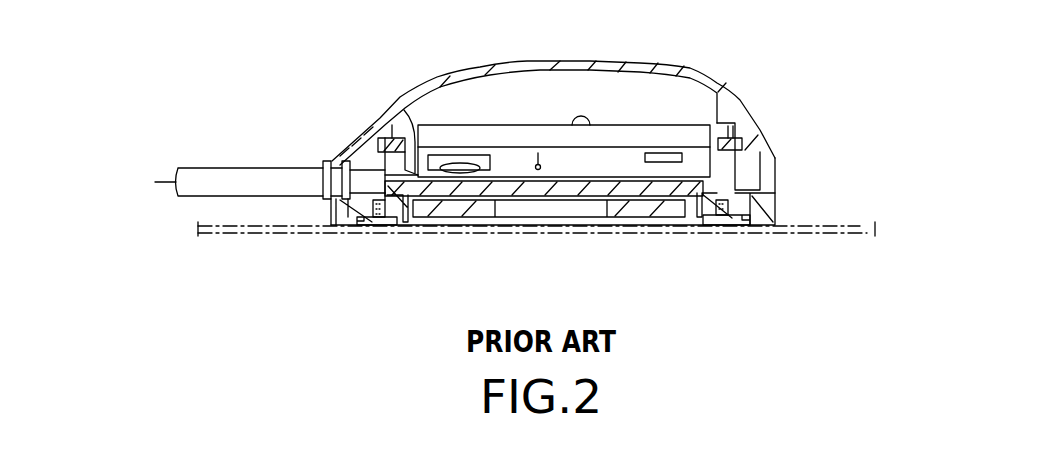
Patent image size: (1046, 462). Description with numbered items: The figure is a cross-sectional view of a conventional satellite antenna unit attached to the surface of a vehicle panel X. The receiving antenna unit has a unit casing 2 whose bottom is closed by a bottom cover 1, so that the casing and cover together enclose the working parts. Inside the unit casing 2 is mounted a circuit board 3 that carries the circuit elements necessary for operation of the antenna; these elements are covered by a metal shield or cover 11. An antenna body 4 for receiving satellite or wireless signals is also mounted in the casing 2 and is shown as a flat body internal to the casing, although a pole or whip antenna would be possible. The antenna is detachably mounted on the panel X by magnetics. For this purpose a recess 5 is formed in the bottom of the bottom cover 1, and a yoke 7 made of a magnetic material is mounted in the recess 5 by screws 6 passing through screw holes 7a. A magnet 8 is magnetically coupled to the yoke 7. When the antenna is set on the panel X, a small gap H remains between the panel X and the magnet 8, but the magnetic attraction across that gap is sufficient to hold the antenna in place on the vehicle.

The bottom cover 1 is at (730, 180).
The unit casing 2 is at (720, 90).
The circuit board 3 is at (447, 145).
The antenna body 4 is at (533, 133).
The recess 5 is at (577, 227).
The screws 6 is at (380, 219).
The yoke 7 is at (627, 212).
The screw holes 7a is at (363, 221).
The magnet 8 is at (655, 208).
The metal shield 11 is at (720, 158).
The vehicle panel X is at (862, 227).
The gap H is at (527, 186).